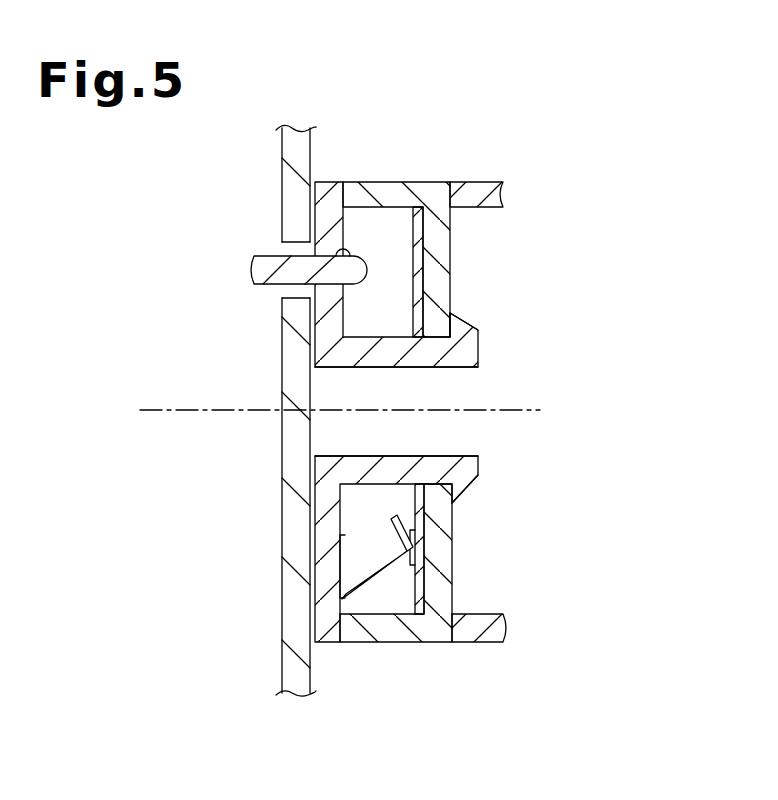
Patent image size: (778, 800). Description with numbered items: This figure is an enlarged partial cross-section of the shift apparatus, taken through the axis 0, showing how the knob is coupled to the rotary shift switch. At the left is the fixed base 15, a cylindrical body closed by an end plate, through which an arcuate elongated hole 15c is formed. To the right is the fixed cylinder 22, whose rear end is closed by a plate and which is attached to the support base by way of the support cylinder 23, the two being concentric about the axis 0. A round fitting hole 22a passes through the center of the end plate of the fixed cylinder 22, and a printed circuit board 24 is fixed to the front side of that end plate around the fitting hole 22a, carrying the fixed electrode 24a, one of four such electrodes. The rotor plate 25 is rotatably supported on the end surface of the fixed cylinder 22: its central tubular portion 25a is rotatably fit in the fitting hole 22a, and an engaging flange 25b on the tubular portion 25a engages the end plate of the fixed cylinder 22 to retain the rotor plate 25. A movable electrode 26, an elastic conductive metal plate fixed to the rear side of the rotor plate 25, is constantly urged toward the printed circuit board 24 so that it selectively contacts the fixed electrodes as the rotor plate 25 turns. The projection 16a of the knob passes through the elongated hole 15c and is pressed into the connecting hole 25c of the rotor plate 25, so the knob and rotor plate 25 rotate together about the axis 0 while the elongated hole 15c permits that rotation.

The axis 0 is at (352, 410).
The fixed base 15 is at (290, 522).
The elongated hole 15c is at (284, 243).
The projection 16a is at (272, 286).
The fixed cylinder 22 is at (403, 188).
The fitting hole 22a is at (455, 347).
The support cylinder 23 is at (480, 183).
The printed circuit board 24 is at (415, 293).
The fixed electrode 24a is at (423, 548).
The rotor plate 25 is at (327, 182).
The tubular portion 25a is at (377, 362).
The engaging flange 25b is at (462, 315).
The connecting hole 25c is at (343, 258).
The movable electrode 26 is at (372, 567).